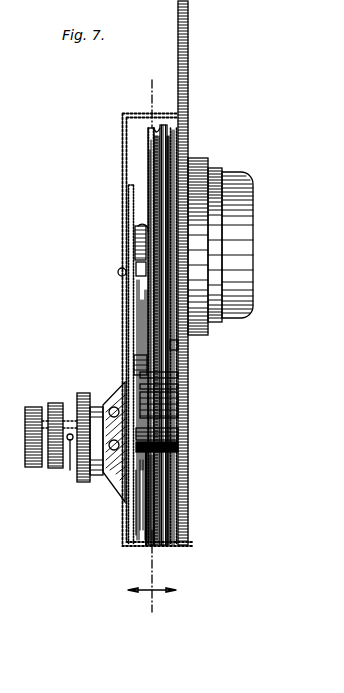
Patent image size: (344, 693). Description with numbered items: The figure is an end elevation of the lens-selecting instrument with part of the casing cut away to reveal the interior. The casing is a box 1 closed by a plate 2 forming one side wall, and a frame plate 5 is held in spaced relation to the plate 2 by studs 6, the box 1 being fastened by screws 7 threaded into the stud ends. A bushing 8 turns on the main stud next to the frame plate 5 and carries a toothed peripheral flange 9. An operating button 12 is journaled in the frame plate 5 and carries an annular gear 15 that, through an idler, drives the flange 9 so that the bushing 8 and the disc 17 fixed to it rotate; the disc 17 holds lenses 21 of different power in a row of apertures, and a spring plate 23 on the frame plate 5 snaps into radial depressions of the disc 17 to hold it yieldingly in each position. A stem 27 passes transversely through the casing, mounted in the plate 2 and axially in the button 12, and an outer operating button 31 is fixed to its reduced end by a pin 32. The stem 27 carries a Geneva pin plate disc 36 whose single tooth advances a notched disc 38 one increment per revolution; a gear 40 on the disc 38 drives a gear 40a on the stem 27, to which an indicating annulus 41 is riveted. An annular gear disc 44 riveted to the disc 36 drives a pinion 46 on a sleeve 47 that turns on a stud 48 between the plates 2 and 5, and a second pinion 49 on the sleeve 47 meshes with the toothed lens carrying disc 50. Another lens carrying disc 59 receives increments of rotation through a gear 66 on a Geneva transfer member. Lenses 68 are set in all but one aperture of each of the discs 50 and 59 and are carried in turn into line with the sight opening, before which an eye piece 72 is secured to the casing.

The box 1 is at (124, 540).
The plate 2 is at (189, 58).
The frame plate 5 is at (128, 207).
The studs 6 is at (180, 438).
The screws 7 is at (118, 272).
The bushing 8 is at (152, 347).
The peripheral flange 9 is at (130, 295).
The operating button 12 is at (90, 384).
The annular gear 15 is at (140, 512).
The disc 17 is at (148, 133).
The lenses 21 is at (150, 143).
The spring plate 23 is at (135, 234).
The stem or spindle 27 is at (160, 462).
The operating button 31 is at (40, 407).
The pin 32 is at (68, 450).
The disc 36 is at (153, 500).
The disc 38 is at (135, 312).
The gear 40 is at (136, 334).
The gear 40a is at (150, 548).
The annulus or disc 41 is at (136, 530).
The annular gear disc 44 is at (155, 514).
The pinion 46 is at (134, 368).
The sleeve 47 is at (178, 397).
The stud 48 is at (178, 387).
The pinion 49 is at (178, 376).
The lens carrying disc 50 is at (165, 128).
The lens carrying disc 59 is at (172, 134).
The gear 66 is at (178, 346).
The lenses 68 is at (152, 150).
The eye piece 72 is at (236, 174).